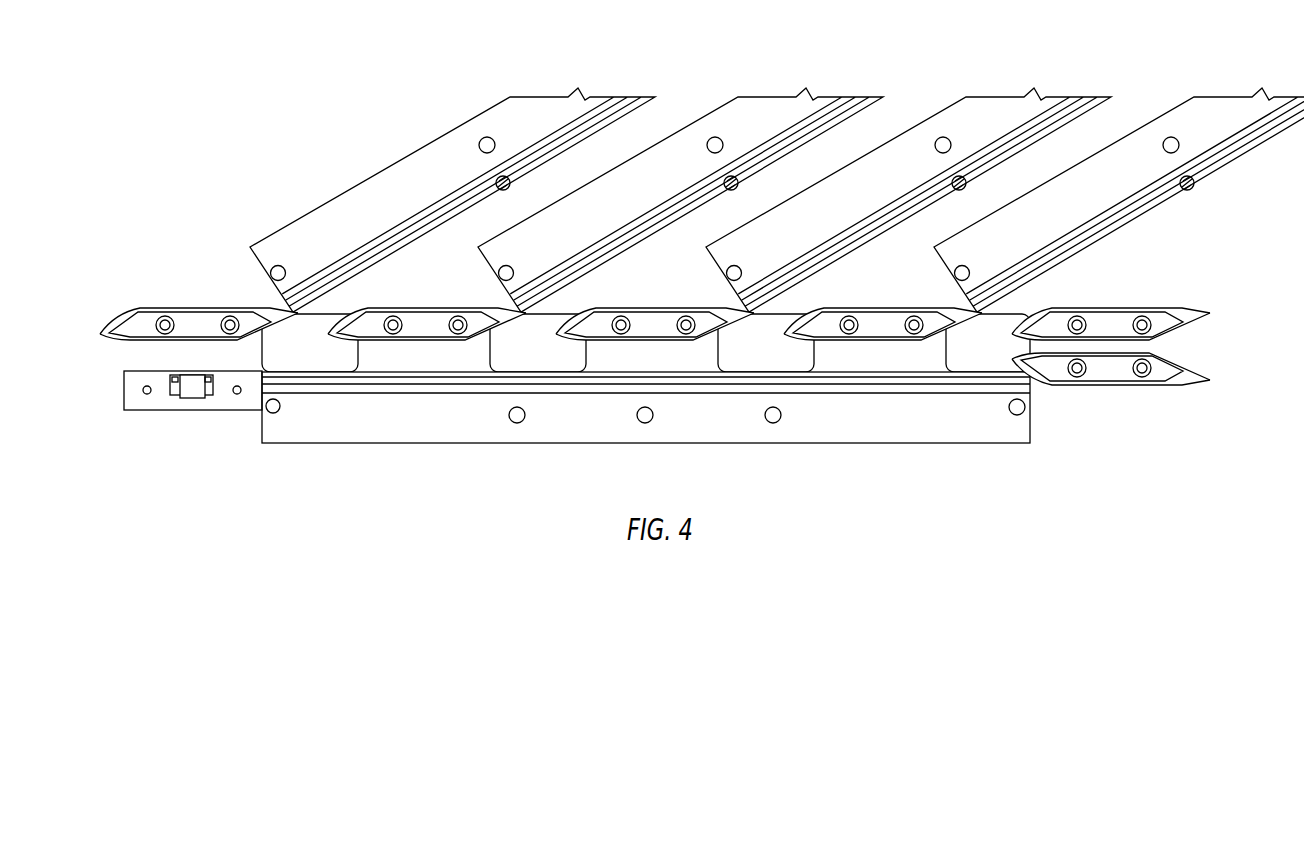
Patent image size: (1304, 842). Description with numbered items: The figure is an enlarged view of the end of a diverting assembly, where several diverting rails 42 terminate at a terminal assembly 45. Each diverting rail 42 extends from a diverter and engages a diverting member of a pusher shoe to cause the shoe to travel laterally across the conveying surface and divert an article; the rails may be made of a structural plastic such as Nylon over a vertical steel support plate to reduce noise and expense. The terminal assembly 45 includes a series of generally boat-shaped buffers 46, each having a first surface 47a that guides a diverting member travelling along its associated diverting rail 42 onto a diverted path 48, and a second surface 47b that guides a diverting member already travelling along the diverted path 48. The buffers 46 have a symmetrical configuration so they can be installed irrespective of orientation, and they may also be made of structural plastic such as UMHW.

The diverting rail 42 is at (420, 236).
The terminal assembly 45 is at (988, 446).
The buffer 46 is at (670, 353).
The first surface 47a is at (165, 312).
The second surface 47b is at (177, 338).
The diverted path 48 is at (403, 358).